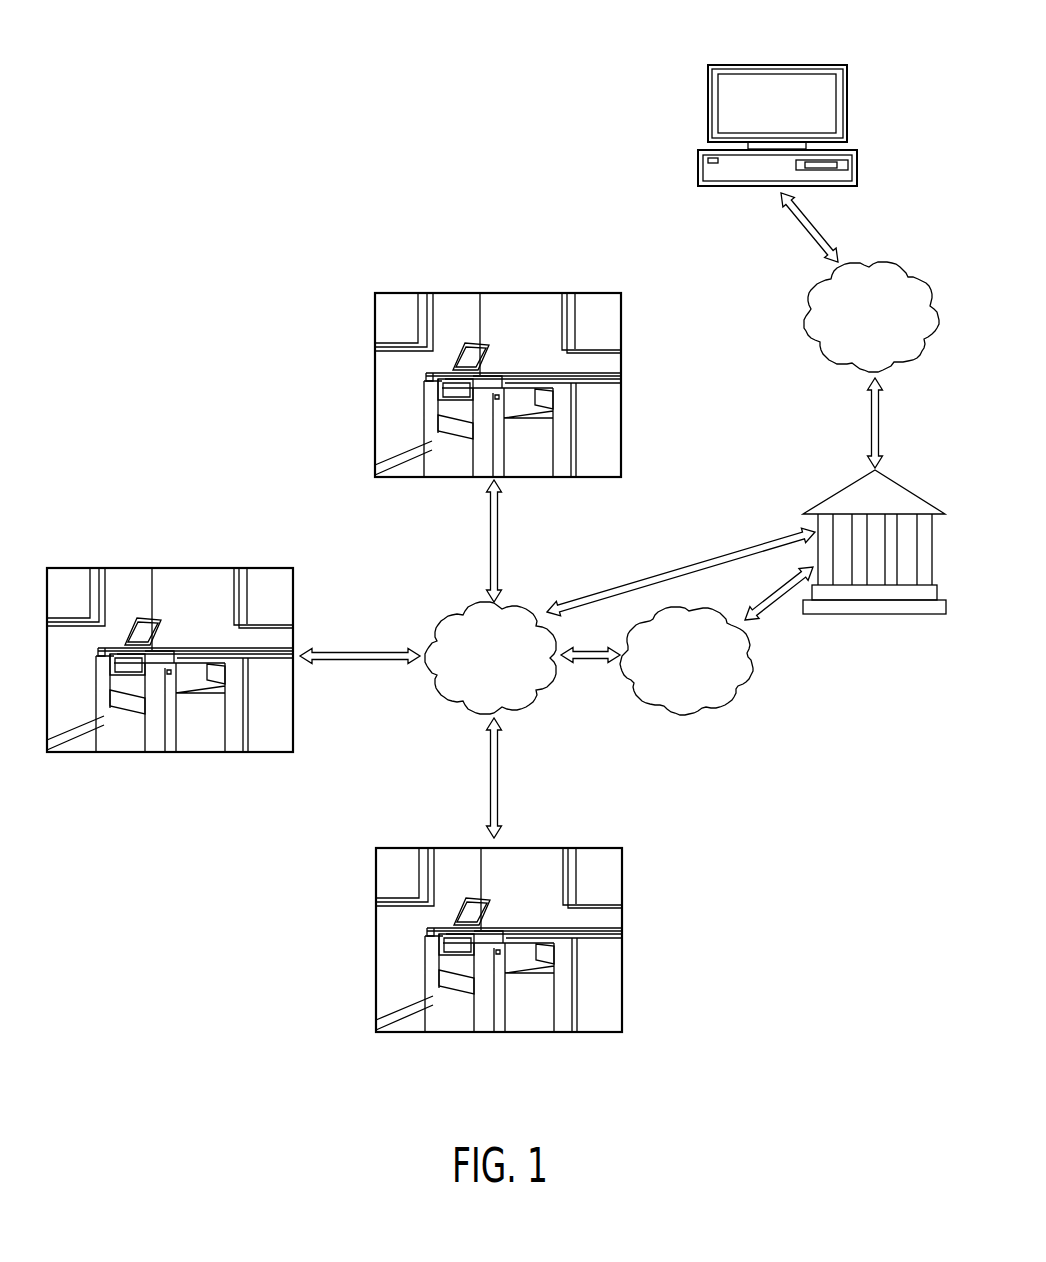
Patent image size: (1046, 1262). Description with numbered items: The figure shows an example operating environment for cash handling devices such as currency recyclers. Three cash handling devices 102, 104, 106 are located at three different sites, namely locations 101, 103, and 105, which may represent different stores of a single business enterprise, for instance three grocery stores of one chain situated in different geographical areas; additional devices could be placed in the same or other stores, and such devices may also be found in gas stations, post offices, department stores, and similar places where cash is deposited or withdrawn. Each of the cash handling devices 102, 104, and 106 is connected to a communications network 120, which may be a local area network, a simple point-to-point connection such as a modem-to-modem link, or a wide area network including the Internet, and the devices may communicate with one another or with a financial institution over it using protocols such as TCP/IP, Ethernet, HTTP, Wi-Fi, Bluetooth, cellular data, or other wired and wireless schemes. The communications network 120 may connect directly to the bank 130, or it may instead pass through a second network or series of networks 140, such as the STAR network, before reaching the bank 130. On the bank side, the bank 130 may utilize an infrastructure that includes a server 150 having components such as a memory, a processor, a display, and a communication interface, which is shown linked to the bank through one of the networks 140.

The location 101 is at (512, 300).
The cash handling device 102 is at (457, 462).
The location 103 is at (187, 577).
The cash handling device 104 is at (123, 738).
The location 105 is at (387, 928).
The cash handling device 106 is at (461, 1020).
The communications network 120 is at (535, 698).
The bank 130 is at (845, 490).
The series of networks 140 is at (805, 310).
The server 150 is at (811, 63).